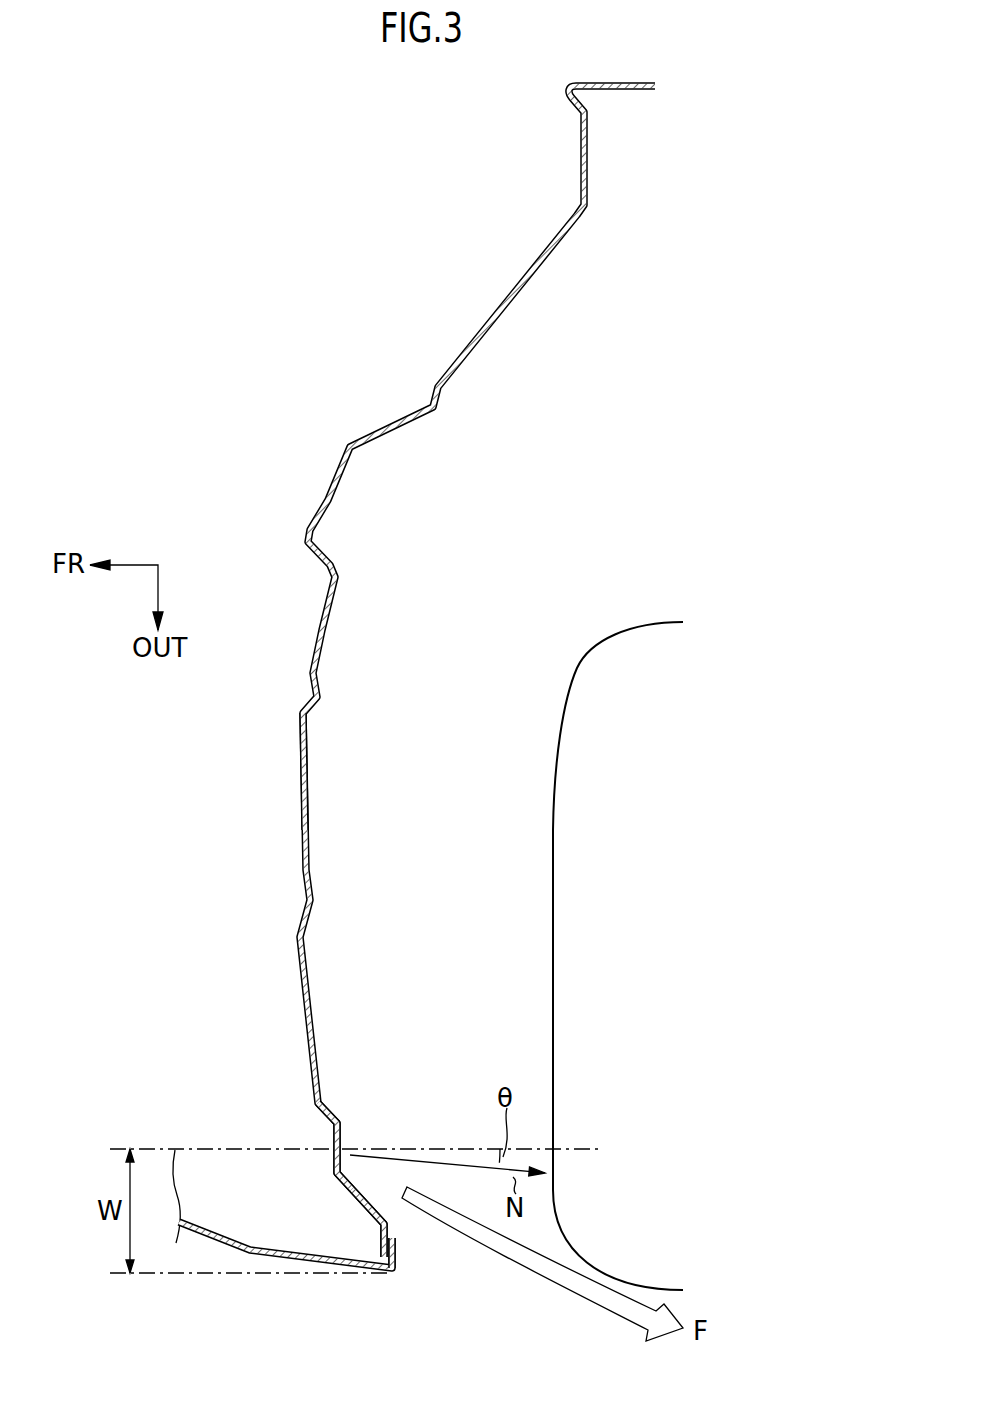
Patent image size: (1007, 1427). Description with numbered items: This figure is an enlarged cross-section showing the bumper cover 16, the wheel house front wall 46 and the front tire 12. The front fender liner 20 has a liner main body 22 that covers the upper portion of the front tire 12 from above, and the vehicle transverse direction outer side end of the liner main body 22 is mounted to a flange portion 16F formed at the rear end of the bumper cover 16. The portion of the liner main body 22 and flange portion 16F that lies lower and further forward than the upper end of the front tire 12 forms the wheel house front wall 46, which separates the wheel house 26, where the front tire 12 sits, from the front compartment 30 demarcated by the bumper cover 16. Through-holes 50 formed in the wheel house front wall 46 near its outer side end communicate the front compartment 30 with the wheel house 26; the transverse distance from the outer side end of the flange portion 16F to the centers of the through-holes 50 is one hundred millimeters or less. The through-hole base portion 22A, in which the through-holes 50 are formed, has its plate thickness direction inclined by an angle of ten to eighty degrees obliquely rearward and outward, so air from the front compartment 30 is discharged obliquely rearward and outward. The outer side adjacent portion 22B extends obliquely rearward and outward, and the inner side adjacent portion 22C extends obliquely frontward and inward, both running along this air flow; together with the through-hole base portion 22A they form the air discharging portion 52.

The front tire 12 is at (577, 670).
The bumper cover 16 is at (323, 1279).
The flange portion 16F is at (397, 1262).
The front fender liner 20 is at (444, 671).
The liner main body 22 is at (444, 671).
The through-hole base portion 22A is at (331, 1180).
The outer side adjacent portion 22B is at (366, 1218).
The inner side adjacent portion 22C is at (386, 1084).
The wheel house 26 is at (462, 934).
The front compartment 30 is at (197, 934).
The wheel house front wall 46 is at (308, 743).
The through-holes 50 is at (345, 1146).
The air discharging portion 52 is at (403, 1080).